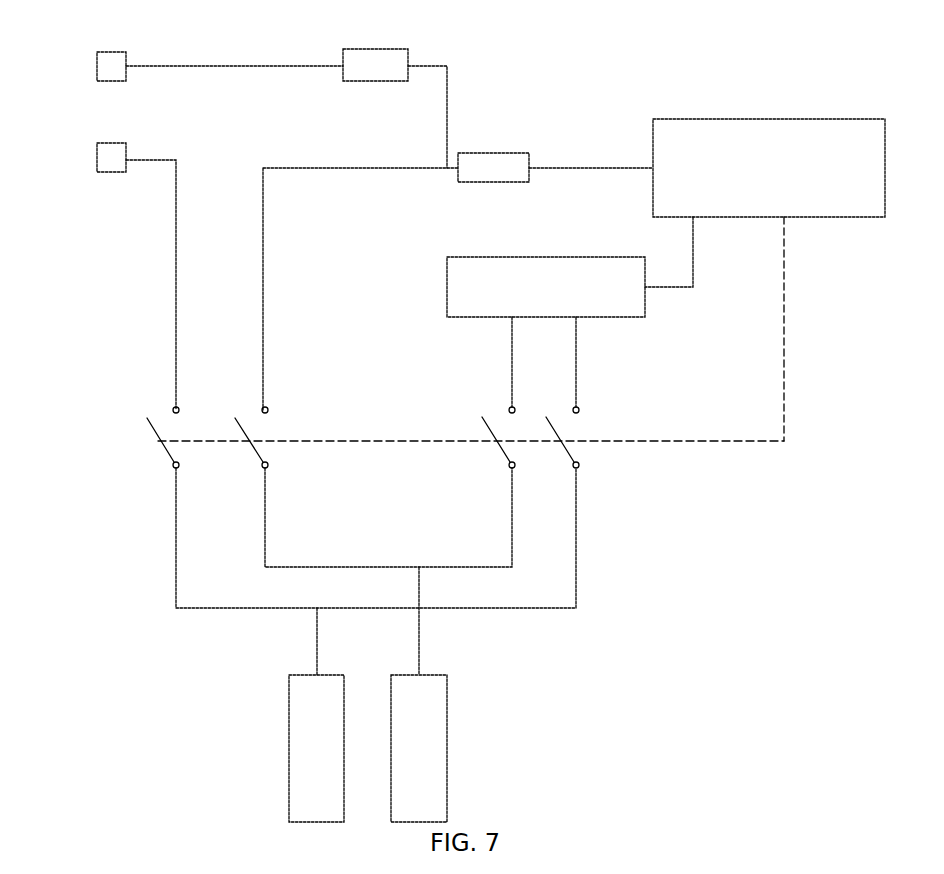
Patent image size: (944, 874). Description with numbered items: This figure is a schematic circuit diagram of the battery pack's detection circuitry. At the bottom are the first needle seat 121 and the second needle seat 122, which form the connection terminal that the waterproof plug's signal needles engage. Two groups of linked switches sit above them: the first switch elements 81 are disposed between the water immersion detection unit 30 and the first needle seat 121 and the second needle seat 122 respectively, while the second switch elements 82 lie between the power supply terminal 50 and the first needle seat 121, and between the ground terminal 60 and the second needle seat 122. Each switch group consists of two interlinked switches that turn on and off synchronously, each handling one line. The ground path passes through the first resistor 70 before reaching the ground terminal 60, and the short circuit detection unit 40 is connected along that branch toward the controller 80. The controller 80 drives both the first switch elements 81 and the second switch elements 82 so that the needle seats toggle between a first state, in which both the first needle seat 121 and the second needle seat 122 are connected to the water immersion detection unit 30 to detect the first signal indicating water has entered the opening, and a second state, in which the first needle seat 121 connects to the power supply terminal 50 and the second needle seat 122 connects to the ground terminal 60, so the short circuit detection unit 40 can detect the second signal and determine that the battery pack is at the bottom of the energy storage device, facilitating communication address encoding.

The water immersion detection unit 30 is at (471, 282).
The short circuit detection unit 40 is at (485, 170).
The power supply terminal 50 is at (112, 157).
The ground terminal 60 is at (112, 65).
The first resistor 70 is at (372, 60).
The controller 80 is at (666, 133).
The first switch elements 81 is at (545, 445).
The second switch elements 82 is at (216, 445).
The first needle seat 121 is at (332, 737).
The second needle seat 122 is at (414, 749).